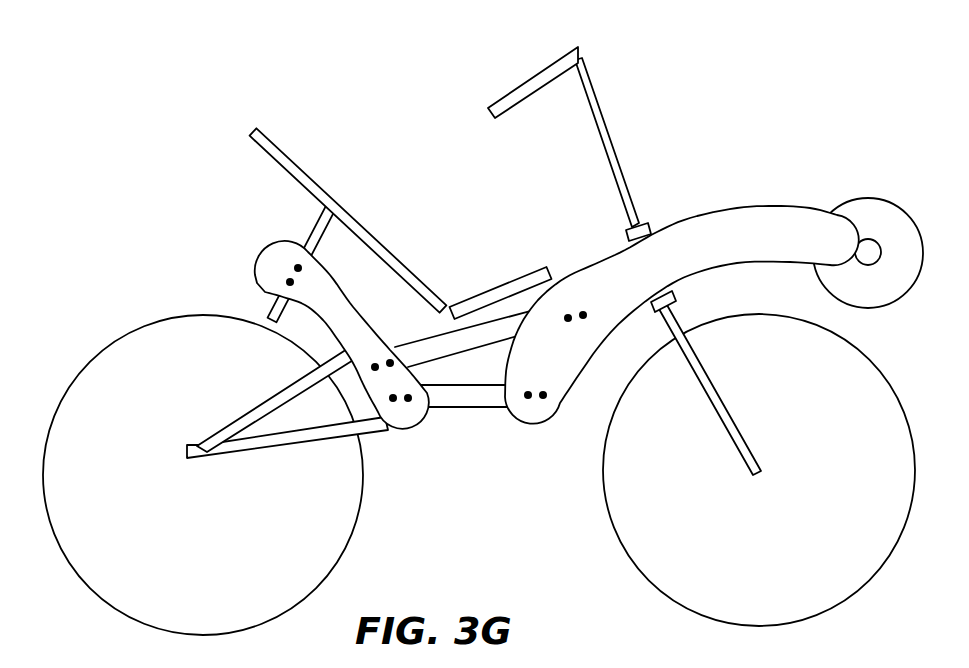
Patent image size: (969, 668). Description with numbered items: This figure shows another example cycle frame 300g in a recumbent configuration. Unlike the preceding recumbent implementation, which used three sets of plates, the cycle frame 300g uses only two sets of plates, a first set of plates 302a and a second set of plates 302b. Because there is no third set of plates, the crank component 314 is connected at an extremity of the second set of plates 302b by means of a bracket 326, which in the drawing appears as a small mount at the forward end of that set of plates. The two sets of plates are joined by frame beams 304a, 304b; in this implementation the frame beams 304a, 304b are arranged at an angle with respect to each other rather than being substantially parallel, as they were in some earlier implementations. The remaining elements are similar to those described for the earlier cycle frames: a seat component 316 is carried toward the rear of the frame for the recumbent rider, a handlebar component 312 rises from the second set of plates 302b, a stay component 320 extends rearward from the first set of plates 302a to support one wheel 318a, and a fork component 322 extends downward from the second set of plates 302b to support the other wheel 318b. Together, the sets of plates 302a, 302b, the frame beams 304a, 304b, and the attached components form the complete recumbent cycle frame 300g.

The cycle frame 300g is at (125, 123).
The first set of plates 302a is at (255, 270).
The second set of plates 302b is at (765, 207).
The frame beam 304a is at (467, 410).
The frame beam 304b is at (417, 345).
The handlebar component 312 is at (488, 108).
The crank component 314 is at (853, 198).
The seat component 316 is at (357, 210).
The wheel 318a is at (227, 582).
The wheel 318b is at (775, 586).
The stay component 320 is at (182, 455).
The fork component 322 is at (720, 423).
The bracket 326 is at (851, 262).